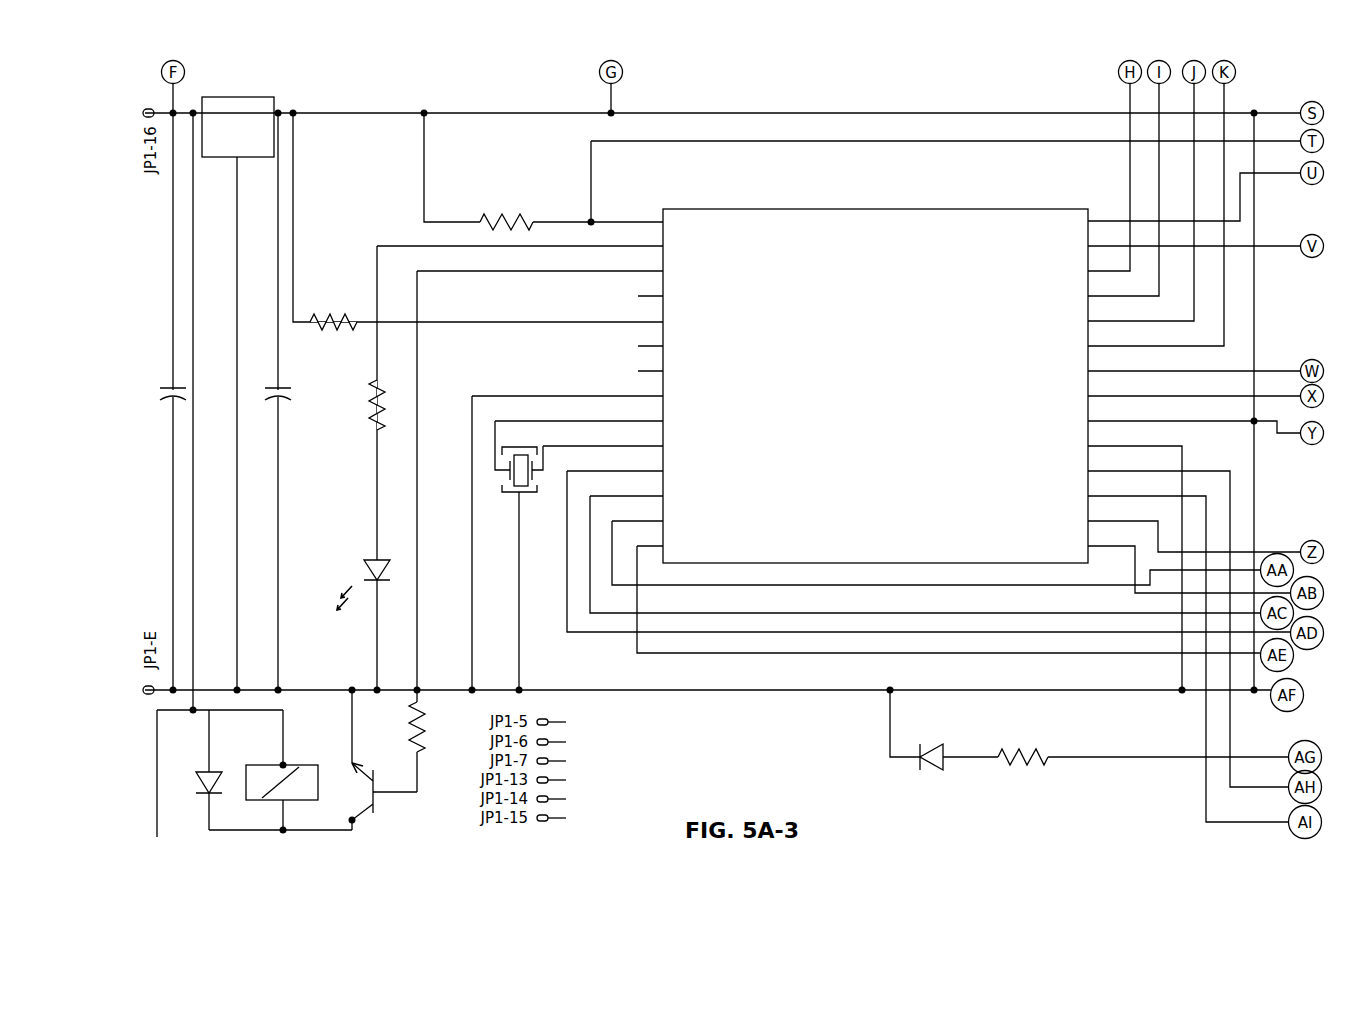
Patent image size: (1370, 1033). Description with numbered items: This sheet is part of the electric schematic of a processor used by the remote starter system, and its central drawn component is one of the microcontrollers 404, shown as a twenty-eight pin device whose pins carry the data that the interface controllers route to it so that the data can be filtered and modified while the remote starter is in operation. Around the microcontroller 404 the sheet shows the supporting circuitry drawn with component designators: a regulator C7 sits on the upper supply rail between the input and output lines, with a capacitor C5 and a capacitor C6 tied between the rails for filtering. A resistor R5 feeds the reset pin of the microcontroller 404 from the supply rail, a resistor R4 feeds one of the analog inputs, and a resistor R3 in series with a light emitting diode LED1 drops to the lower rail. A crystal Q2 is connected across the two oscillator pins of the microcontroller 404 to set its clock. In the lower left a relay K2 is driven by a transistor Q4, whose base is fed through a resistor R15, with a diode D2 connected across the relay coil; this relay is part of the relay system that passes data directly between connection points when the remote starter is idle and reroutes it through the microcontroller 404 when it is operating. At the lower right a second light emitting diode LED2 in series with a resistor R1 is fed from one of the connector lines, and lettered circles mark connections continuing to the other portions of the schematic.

The microcontrollers 404 is at (995, 209).
The voltage regulator 7905 C7 is at (242, 153).
The capacitor 100uF C5 is at (175, 386).
The capacitor 10uF C6 is at (289, 386).
The resistor 10K R4 is at (333, 321).
The resistor 1K R3 is at (375, 405).
The resistor 10K R5 is at (492, 220).
The resistor 10K R15 is at (397, 741).
The resistor 1K R1 is at (1023, 760).
The light emitting diode LED1 is at (347, 583).
The light emitting diode LED2 is at (924, 775).
The diode GS1A D2 is at (190, 754).
The relay TF2-12V K2 is at (305, 768).
The crystal 10MHz Q2 is at (482, 471).
The transistor Q4 is at (398, 762).